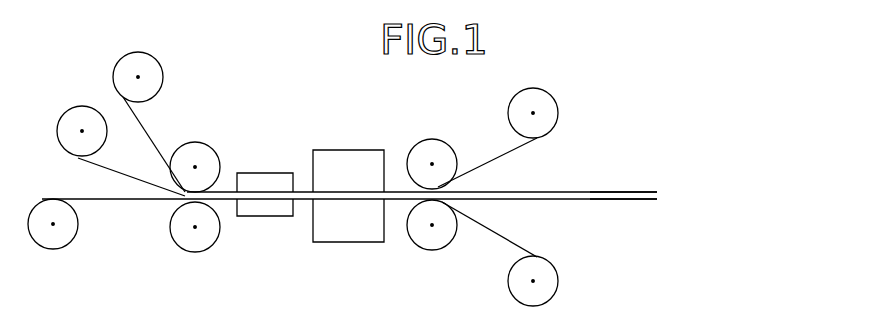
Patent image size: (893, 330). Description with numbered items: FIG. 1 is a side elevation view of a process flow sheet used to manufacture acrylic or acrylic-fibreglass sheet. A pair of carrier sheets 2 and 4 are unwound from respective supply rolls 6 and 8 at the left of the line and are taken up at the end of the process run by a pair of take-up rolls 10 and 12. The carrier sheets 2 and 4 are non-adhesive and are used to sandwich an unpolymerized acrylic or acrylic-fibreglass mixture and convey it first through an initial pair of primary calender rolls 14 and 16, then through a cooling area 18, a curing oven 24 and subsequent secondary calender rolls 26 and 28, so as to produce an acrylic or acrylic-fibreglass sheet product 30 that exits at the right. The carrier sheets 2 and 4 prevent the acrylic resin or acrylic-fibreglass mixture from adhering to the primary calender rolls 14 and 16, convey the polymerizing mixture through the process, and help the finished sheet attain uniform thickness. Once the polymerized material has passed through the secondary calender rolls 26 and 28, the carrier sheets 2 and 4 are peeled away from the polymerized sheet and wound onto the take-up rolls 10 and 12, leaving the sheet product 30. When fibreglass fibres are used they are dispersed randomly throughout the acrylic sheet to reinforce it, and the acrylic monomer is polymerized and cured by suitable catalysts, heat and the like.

The carrier sheet 2 is at (151, 148).
The carrier sheet 4 is at (122, 199).
The supply roll 6 is at (163, 77).
The supply roll 8 is at (52, 199).
The take-up roll 10 is at (533, 88).
The take-up roll 12 is at (560, 283).
The primary calender roll 14 is at (192, 141).
The primary calender roll 16 is at (195, 253).
The cooling area 18 is at (263, 173).
The curing oven 24 is at (348, 150).
The secondary calender roll 26 is at (430, 139).
The secondary calender roll 28 is at (432, 250).
The sheet product 30 is at (587, 190).